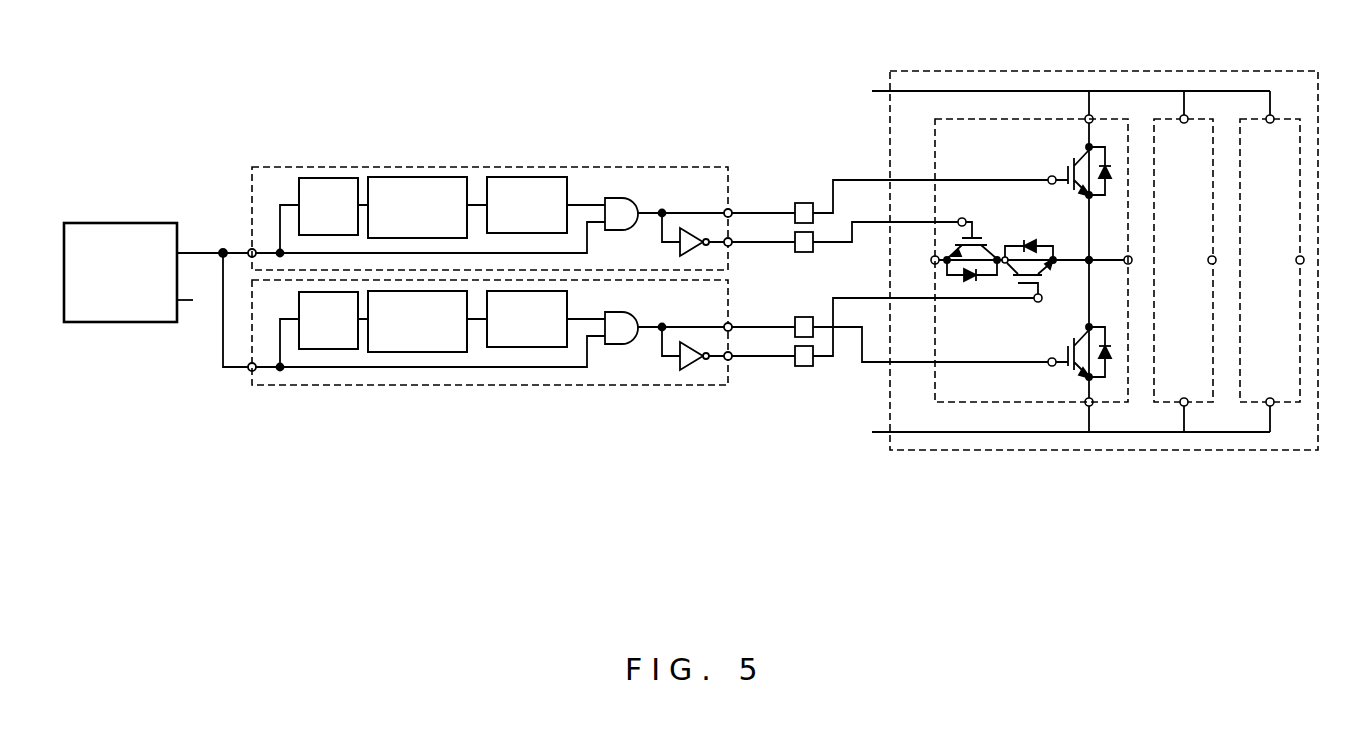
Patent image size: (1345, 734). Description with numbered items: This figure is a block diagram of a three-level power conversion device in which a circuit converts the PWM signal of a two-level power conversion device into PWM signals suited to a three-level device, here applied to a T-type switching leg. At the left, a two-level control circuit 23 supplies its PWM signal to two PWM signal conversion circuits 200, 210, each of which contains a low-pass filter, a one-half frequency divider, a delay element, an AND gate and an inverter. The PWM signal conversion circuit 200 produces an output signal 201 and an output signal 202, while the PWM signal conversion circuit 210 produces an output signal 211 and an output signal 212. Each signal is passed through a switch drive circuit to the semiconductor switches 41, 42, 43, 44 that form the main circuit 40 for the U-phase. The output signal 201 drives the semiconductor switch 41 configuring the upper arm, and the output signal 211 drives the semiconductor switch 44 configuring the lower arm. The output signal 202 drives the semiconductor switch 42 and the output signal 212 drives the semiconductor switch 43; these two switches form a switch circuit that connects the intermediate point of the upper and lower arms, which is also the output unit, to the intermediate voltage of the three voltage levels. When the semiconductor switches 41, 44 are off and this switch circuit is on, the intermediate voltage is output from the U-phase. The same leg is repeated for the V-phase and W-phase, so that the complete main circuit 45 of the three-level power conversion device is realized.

The two-level control circuit 23 is at (130, 222).
The PWM signal conversion circuit 200 is at (518, 167).
The PWM signal conversion circuit 210 is at (480, 386).
The output signal 201 is at (735, 210).
The output signal 202 is at (735, 246).
The output signal 211 is at (735, 323).
The output signal 212 is at (735, 360).
The main circuit 40 is at (960, 118).
The main circuit 45 is at (1050, 70).
The semiconductor switch 41 is at (1058, 172).
The semiconductor switch 42 is at (972, 232).
The semiconductor switch 43 is at (1032, 308).
The semiconductor switch 44 is at (1067, 368).